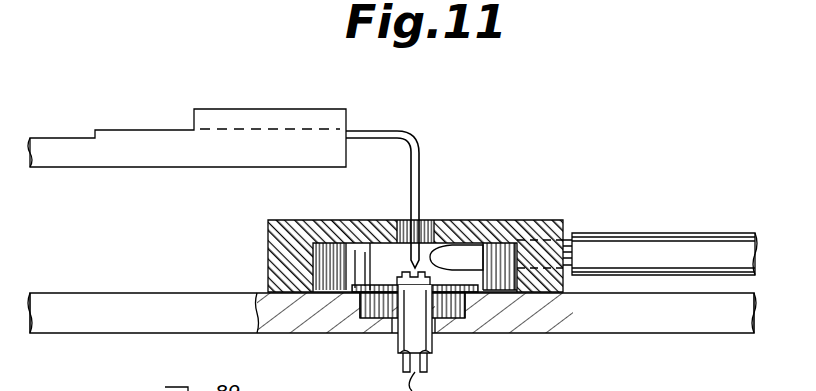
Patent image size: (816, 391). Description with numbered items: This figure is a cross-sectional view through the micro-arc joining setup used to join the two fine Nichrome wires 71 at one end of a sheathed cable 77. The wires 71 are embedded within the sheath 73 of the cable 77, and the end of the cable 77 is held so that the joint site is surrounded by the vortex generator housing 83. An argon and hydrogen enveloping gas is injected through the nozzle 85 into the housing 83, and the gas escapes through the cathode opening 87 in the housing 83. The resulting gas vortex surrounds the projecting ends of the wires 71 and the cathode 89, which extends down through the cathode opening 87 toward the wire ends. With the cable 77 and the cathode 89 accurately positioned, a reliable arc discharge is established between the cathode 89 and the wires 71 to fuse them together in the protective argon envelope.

The cathode 89 is at (419, 158).
The cathode opening 87 is at (425, 221).
The nozzle 85 is at (476, 248).
The vortex generator housing 83 is at (337, 220).
The sheathed cable 77 is at (398, 341).
The sheath 73 is at (432, 343).
The Nichrome wires 71 is at (432, 381).